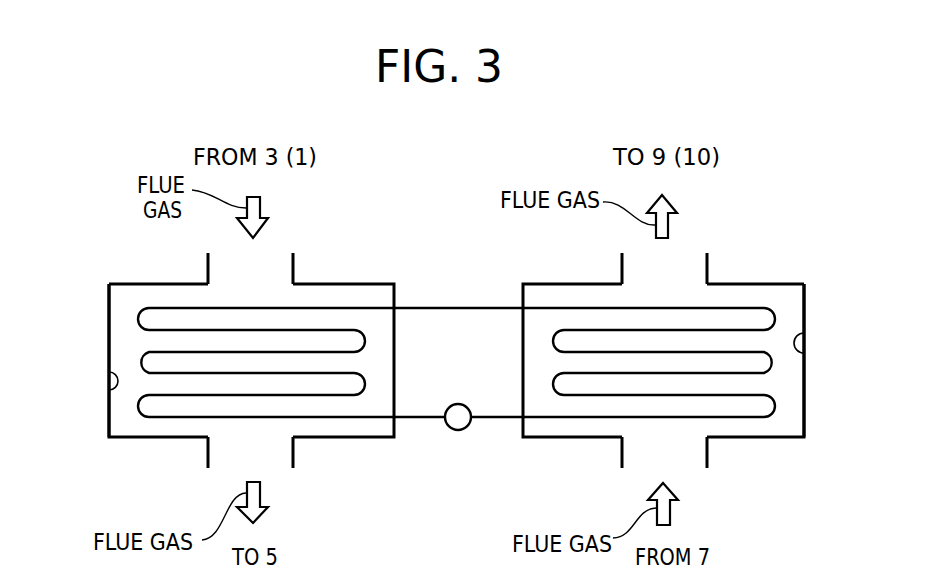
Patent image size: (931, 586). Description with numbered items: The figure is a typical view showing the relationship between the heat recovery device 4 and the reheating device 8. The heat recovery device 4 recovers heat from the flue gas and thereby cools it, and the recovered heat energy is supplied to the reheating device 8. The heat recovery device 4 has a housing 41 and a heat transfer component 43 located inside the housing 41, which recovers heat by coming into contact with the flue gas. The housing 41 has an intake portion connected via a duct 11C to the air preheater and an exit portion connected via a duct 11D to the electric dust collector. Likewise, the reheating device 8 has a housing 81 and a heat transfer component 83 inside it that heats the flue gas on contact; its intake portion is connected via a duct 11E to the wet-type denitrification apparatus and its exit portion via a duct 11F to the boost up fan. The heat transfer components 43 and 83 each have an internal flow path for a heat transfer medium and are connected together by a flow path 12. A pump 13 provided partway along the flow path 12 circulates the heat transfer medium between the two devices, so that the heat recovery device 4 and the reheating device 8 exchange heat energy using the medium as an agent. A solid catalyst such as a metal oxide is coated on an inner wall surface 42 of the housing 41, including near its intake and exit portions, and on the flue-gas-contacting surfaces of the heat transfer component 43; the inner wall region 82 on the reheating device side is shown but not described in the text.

The heat recovery device 4 is at (109, 284).
The reheating device 8 is at (804, 284).
The duct 11C is at (294, 267).
The duct 11D is at (294, 452).
The duct 11E is at (621, 451).
The duct 11F is at (708, 269).
The flow path 12 is at (450, 307).
The pump 13 is at (468, 429).
The housing 41 is at (108, 353).
The inner wall surface 42 is at (109, 389).
The heat transfer component 43 is at (223, 352).
The housing 81 is at (805, 310).
The port of second heat exchanger 82 is at (805, 353).
The heat transfer component 83 is at (695, 330).